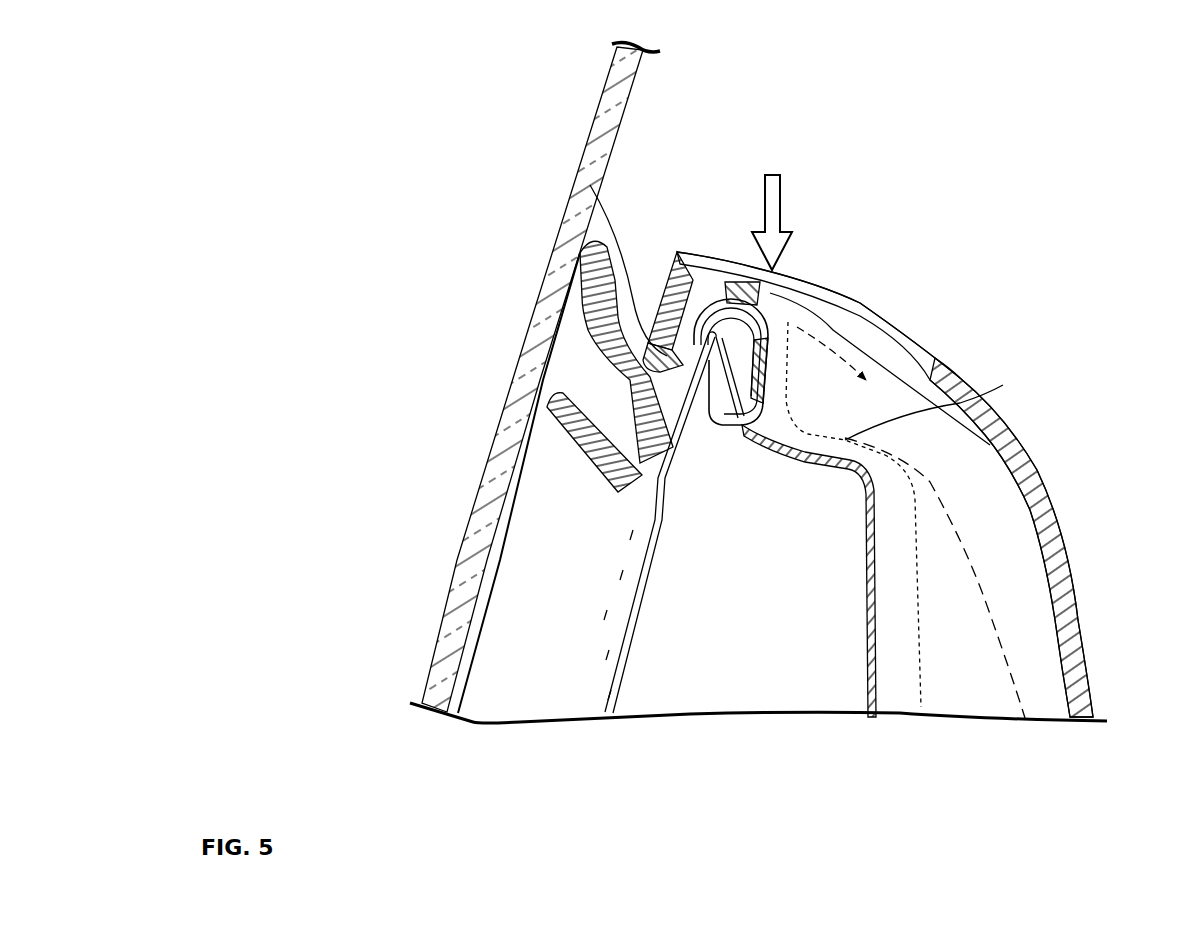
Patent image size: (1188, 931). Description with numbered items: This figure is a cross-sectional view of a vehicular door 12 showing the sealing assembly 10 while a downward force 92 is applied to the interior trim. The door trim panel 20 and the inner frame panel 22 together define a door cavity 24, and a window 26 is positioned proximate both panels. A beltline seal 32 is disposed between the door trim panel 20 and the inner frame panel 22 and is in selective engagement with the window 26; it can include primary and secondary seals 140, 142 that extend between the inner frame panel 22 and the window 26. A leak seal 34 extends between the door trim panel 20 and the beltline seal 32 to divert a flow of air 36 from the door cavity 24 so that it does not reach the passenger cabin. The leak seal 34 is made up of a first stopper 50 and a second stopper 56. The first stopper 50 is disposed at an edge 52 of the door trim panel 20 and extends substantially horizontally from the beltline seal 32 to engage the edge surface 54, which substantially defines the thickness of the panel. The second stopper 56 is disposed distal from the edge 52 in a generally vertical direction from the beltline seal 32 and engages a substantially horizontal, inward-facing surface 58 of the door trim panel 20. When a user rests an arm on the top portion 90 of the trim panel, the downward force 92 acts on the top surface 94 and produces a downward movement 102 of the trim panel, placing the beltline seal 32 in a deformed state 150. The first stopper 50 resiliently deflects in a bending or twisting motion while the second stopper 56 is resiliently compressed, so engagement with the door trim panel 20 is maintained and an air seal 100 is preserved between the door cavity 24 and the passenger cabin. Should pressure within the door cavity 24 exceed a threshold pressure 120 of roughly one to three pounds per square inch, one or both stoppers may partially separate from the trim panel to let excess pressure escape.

The sealing assembly 10 is at (885, 272).
The vehicular door 12 is at (448, 343).
The door trim panel 20 is at (1040, 473).
The inner frame panel 22 is at (633, 607).
The door cavity 24 is at (1001, 546).
The window 26 is at (590, 135).
The beltline seal 32 is at (580, 320).
The leak seal 34 is at (708, 288).
The flow of air 36 is at (945, 408).
The first stopper 50 is at (583, 247).
The edge 52 is at (640, 290).
The edge surface 54 is at (683, 428).
The second stopper 56 is at (772, 285).
The inward-facing surface 58 is at (860, 332).
The top portion 90 is at (731, 275).
The downward force 92 is at (777, 207).
The top surface 94 is at (870, 307).
The air seal 100 is at (670, 237).
The downward movement 102 is at (648, 273).
The threshold pressure 120 is at (1000, 628).
The primary seal 140 is at (600, 362).
The secondary seal 142 is at (600, 437).
The deformed state 150 is at (825, 217).